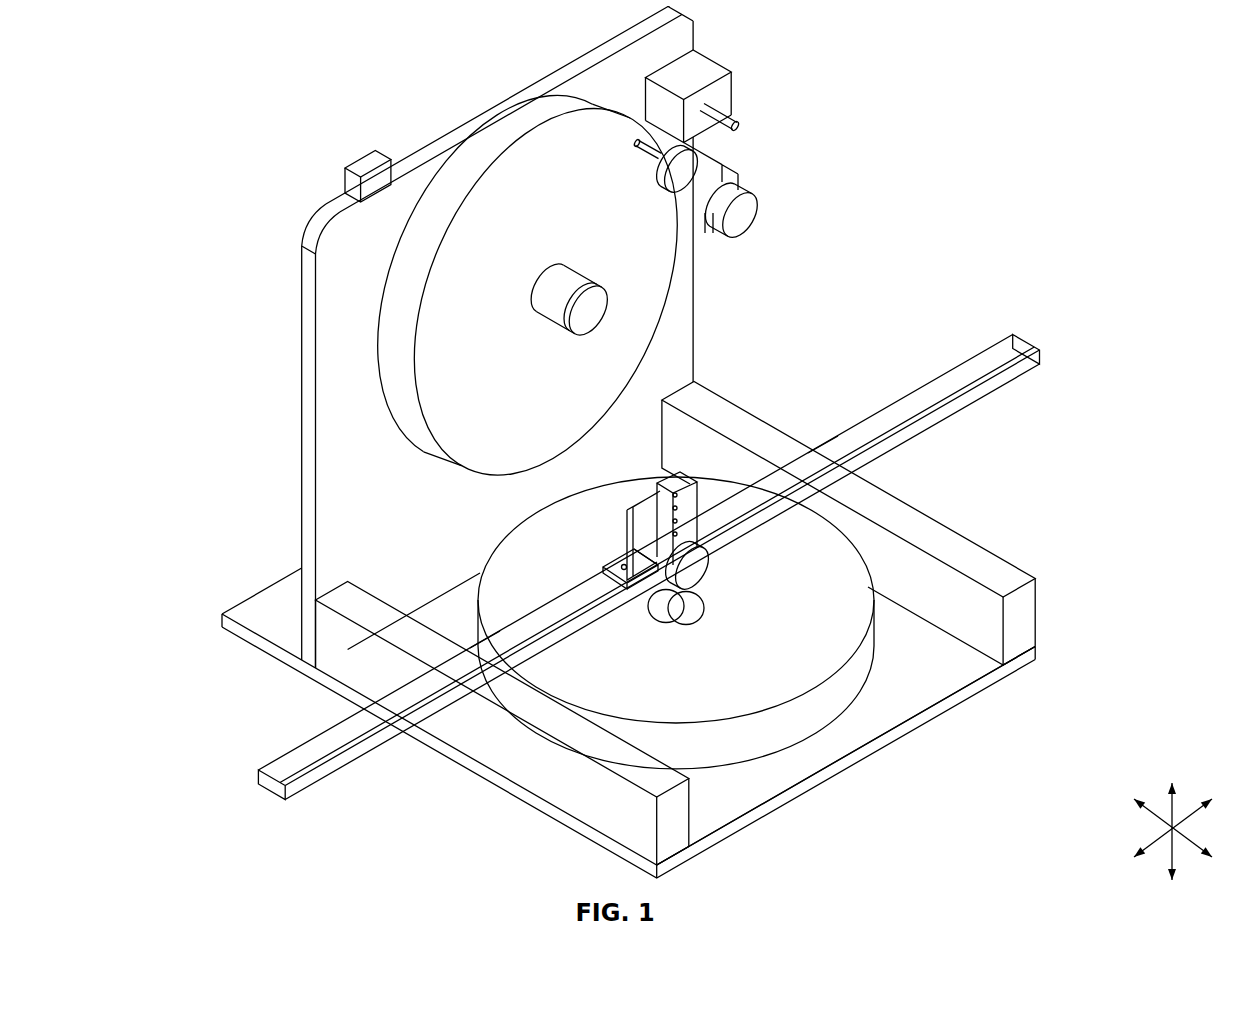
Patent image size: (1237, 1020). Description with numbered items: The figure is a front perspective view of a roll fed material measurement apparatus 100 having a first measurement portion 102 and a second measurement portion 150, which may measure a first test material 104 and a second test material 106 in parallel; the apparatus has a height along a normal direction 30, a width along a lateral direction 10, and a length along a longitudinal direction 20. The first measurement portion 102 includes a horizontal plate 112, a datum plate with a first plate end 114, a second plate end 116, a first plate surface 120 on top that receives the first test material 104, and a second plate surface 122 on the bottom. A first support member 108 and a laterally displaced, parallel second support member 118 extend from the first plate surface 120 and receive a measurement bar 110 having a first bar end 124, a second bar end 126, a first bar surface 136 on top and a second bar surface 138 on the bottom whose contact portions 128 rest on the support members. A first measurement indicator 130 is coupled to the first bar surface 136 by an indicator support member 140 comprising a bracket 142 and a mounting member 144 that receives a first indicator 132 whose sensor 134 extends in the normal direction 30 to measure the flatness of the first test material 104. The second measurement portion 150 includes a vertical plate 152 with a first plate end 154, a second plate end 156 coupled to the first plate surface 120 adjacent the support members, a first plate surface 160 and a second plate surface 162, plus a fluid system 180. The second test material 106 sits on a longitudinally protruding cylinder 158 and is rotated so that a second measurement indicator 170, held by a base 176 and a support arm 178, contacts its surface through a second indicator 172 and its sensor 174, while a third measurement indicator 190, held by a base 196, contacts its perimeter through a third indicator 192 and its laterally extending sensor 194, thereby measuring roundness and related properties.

The roll fed material measurement apparatus 100 is at (223, 88).
The first measurement portion 102 is at (979, 514).
The first test material 104 is at (786, 672).
The second test material 106 is at (540, 176).
The first support member 108 is at (1017, 610).
The measurement bar 110 is at (998, 335).
The horizontal plate 112 is at (731, 803).
The first plate end 114 is at (893, 731).
The second plate end 116 is at (238, 588).
The second support member 118 is at (575, 796).
The first plate surface 120 is at (943, 665).
The second plate surface 122 is at (683, 871).
The first bar end 124 is at (1031, 334).
The second bar end 126 is at (262, 795).
The contact portions 128 is at (836, 483).
The first measurement indicator 130 is at (716, 574).
The first indicator 132 is at (691, 577).
The sensor 134 is at (682, 606).
The first bar surface 136 is at (916, 394).
The second bar surface 138 is at (303, 786).
The indicator support member 140 is at (628, 551).
The bracket 142 is at (640, 556).
The mounting member 144 is at (673, 510).
The second measurement portion 150 is at (289, 372).
The vertical plate 152 is at (332, 318).
The first plate end 154 is at (597, 48).
The second plate end 156 is at (305, 666).
The cylinder 158 is at (598, 315).
The first plate surface 160 is at (330, 238).
The second plate surface 162 is at (301, 215).
The second measurement indicator 170 is at (737, 86).
The second indicator 172 is at (675, 178).
The sensor 174 is at (655, 150).
The base 176 is at (700, 67).
The support arm 178 is at (738, 129).
The fluid system 180 is at (366, 149).
The third measurement indicator 190 is at (777, 213).
The third indicator 192 is at (742, 222).
The sensor 194 is at (707, 230).
The base 196 is at (740, 186).
The lateral direction 10 is at (1185, 819).
The longitudinal direction 20 is at (1185, 834).
The normal direction 30 is at (1170, 817).